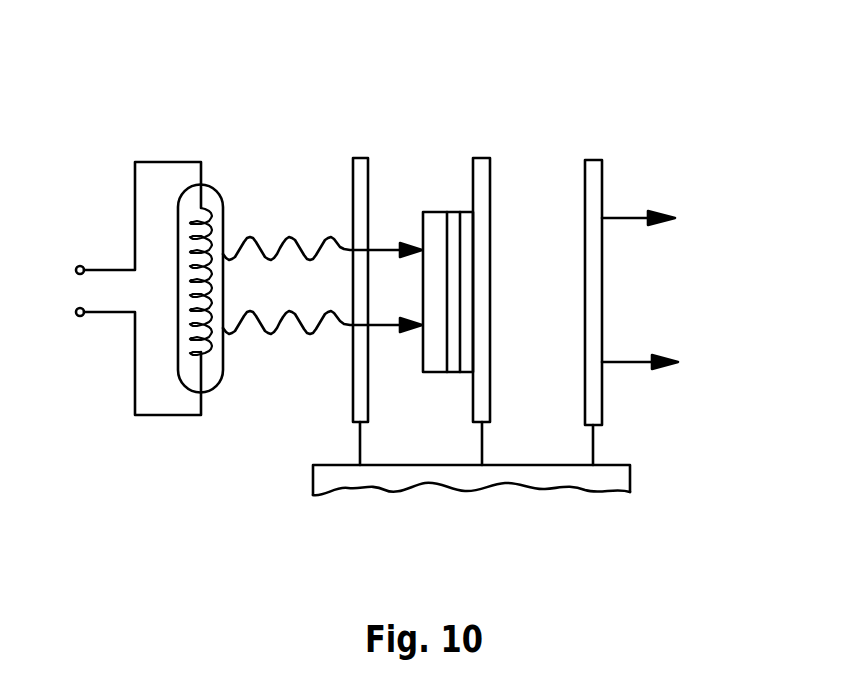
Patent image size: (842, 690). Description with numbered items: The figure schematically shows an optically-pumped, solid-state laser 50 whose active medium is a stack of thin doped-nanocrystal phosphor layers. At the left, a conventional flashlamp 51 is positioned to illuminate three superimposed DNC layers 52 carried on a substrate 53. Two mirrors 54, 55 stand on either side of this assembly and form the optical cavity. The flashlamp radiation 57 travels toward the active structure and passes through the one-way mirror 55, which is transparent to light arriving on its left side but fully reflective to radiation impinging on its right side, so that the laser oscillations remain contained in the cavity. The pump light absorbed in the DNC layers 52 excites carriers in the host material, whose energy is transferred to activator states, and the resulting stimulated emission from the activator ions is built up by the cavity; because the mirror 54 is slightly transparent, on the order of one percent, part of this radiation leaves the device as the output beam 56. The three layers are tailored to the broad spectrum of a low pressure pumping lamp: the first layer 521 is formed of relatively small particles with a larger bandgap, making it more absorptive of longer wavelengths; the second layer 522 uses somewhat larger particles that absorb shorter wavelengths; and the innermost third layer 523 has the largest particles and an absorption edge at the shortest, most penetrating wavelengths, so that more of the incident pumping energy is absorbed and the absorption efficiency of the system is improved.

The optically-pumped solid-state laser 50 is at (532, 170).
The flashlamp 51 is at (207, 189).
The DNC layers 52 is at (448, 193).
The first layer 521 is at (437, 372).
The second layer 522 is at (453, 372).
The third layer 523 is at (472, 211).
The substrate 53 is at (483, 158).
The mirror 54 is at (593, 160).
The one-way mirror 55 is at (361, 157).
The output laser beam 56 is at (626, 362).
The flashlamp radiation 57 is at (287, 236).